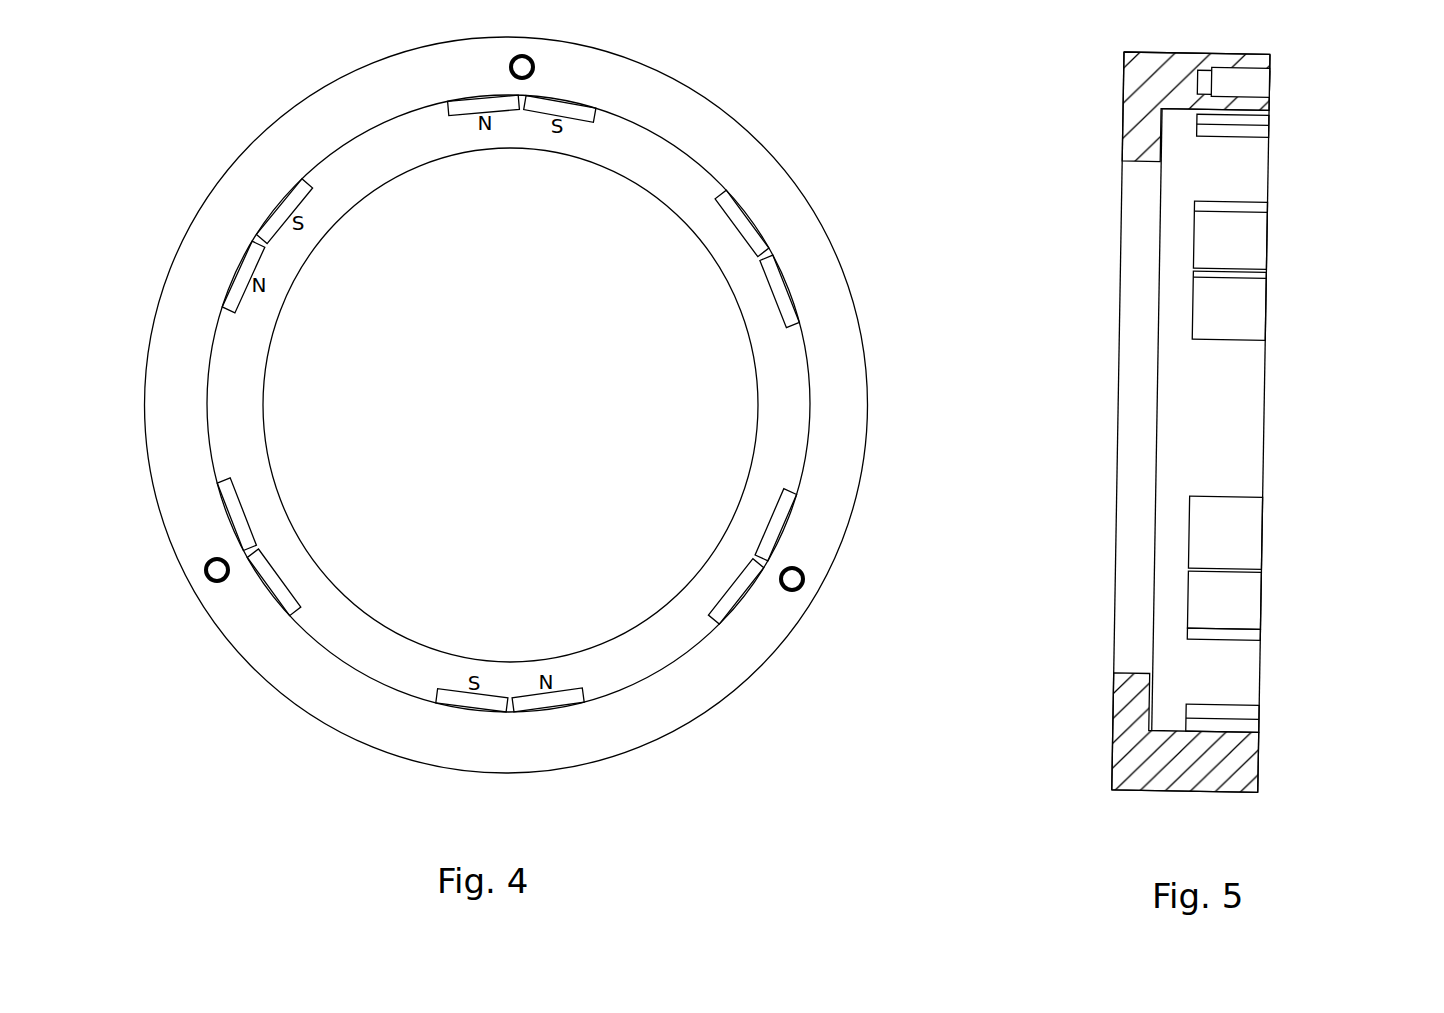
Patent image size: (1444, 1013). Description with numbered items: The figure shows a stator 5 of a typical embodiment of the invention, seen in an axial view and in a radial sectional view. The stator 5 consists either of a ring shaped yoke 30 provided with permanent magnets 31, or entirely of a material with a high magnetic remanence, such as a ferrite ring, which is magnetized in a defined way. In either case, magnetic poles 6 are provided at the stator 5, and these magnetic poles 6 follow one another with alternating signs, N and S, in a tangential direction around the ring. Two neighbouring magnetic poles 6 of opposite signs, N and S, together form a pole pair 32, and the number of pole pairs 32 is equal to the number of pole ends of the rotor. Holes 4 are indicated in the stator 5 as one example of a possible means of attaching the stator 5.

In FIG. 4, the holes 4 is at (812, 580).
In FIG. 5, the holes 4 is at (1273, 82).
In FIG. 4, the stator 5 is at (870, 412).
In FIG. 5, the stator 5 is at (1118, 308).
In FIG. 4, the magnetic poles 6 is at (256, 525).
In FIG. 5, the magnetic poles 6 is at (1273, 118).
In FIG. 4, the ring shaped yoke 30 is at (668, 727).
In FIG. 5, the ring shaped yoke 30 is at (1108, 734).
In FIG. 4, the permanent magnets 31 is at (784, 517).
In FIG. 4, the pole pairs 32 is at (787, 293).
In FIG. 5, the pole pairs 32 is at (1273, 317).